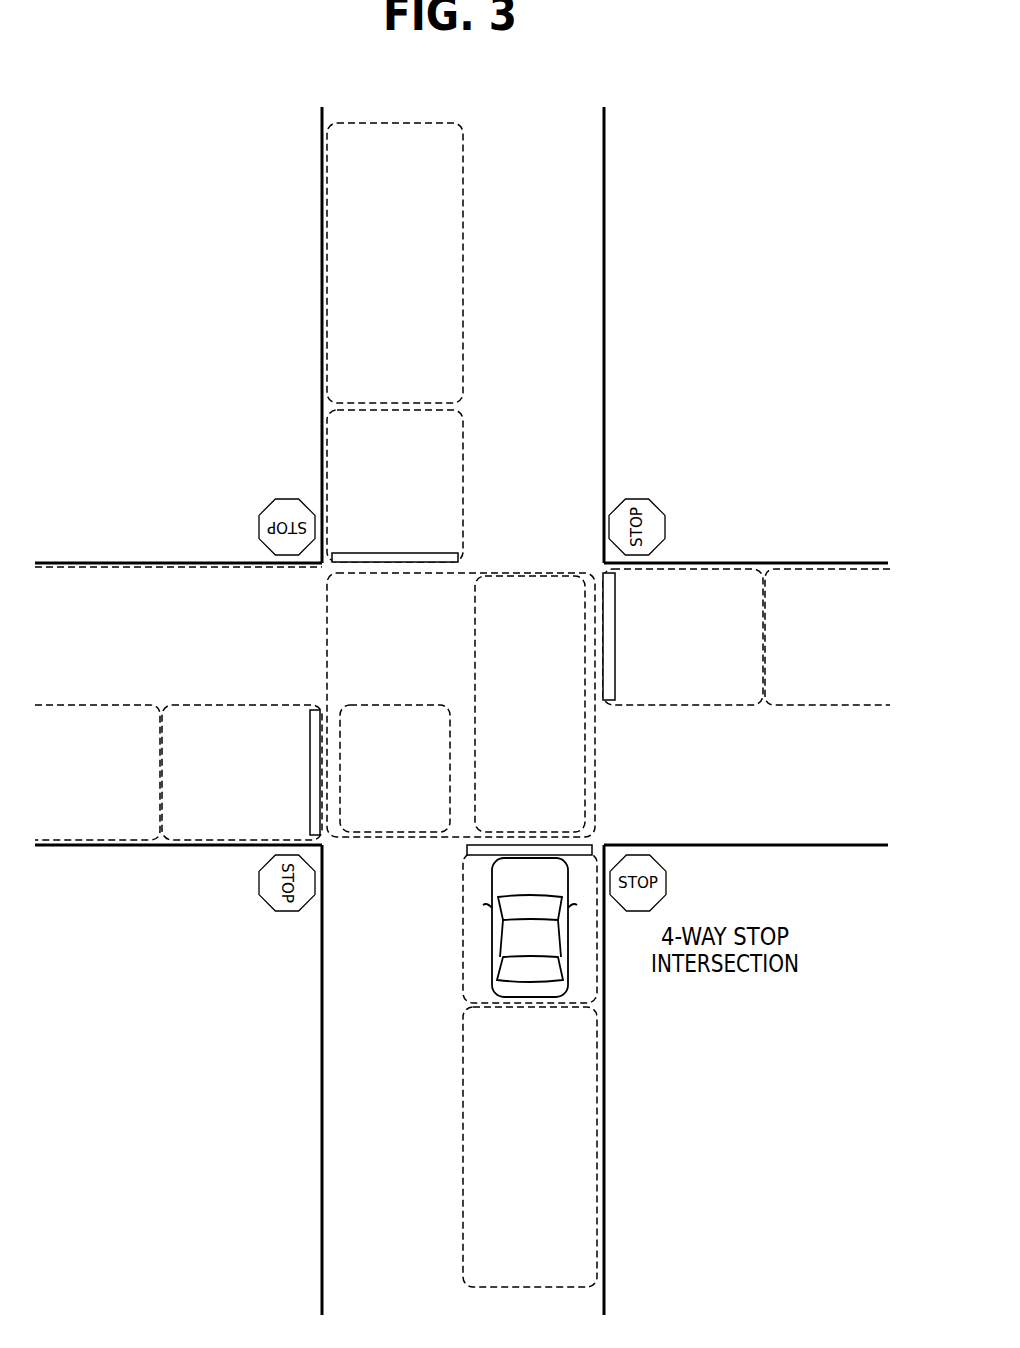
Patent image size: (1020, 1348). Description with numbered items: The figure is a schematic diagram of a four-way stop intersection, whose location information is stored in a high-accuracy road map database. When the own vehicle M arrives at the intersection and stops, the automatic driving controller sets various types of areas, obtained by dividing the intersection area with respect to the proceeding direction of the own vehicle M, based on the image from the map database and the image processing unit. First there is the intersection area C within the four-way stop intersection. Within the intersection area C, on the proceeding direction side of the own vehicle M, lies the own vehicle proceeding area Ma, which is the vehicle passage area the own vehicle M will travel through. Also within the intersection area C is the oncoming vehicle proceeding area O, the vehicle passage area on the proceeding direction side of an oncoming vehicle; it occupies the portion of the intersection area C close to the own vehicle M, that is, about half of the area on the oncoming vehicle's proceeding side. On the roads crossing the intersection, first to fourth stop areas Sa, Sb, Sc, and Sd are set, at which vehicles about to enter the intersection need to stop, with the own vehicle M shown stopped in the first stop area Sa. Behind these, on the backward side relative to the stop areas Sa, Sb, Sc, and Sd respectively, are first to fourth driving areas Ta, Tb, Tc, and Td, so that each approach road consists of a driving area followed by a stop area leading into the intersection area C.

The first driving area Ta is at (530, 1147).
The second driving area Tb is at (97, 772).
The third driving area Tc is at (395, 263).
The fourth driving area Td is at (827, 637).
The first stop area Sa is at (522, 924).
The second stop area Sb is at (242, 772).
The third stop area Sc is at (395, 486).
The fourth stop area Sd is at (683, 637).
The intersection area C is at (461, 705).
The oncoming vehicle proceeding area O is at (395, 769).
The own vehicle proceeding area Ma is at (530, 704).
The own vehicle M is at (530, 997).